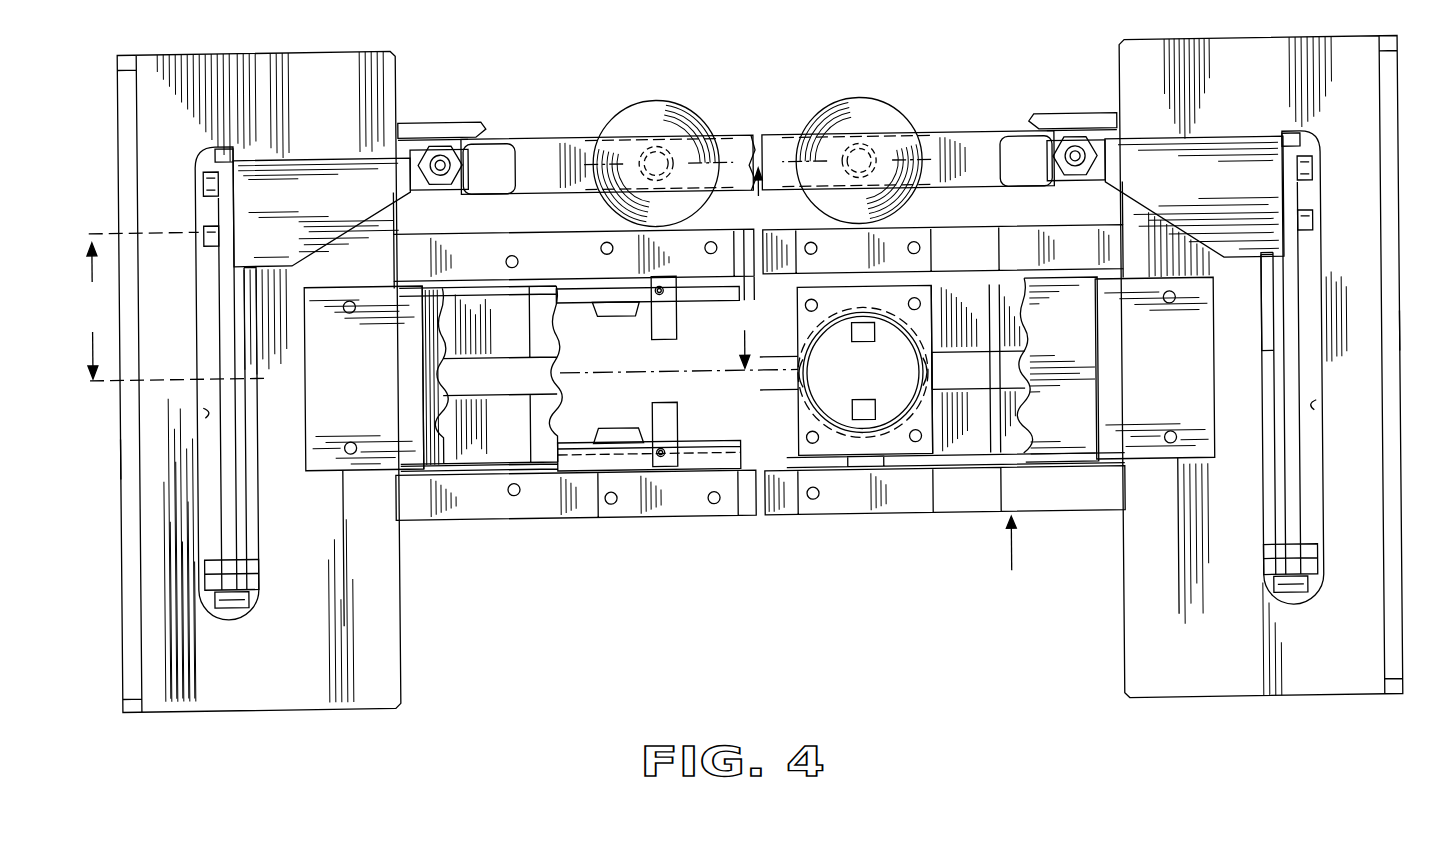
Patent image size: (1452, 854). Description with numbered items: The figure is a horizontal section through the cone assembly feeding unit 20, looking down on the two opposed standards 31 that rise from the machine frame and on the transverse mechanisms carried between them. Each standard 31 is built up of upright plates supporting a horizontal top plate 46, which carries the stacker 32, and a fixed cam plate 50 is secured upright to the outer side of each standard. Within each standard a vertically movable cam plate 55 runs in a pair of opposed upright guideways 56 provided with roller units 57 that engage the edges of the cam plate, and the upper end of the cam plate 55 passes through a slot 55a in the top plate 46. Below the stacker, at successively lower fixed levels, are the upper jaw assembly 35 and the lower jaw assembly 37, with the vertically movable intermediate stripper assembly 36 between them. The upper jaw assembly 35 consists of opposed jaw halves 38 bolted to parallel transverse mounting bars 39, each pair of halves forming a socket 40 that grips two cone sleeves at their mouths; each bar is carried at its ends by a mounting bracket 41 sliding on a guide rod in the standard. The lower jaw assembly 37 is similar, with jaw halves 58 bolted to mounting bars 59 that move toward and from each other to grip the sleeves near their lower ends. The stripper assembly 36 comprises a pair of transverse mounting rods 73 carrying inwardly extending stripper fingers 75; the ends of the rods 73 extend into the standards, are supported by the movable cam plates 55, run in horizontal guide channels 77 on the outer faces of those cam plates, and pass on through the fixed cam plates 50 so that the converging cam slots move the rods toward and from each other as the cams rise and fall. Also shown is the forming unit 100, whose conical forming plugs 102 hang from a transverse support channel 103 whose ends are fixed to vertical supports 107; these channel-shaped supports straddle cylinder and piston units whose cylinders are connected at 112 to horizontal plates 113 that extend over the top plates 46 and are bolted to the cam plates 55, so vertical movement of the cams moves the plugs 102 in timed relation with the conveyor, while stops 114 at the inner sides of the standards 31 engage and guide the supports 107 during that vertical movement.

The unit 20 is at (1011, 553).
The standards 31 is at (122, 549).
The stacker 32 is at (348, 463).
The upper jaw assembly 35 is at (924, 323).
The intermediate stripper assembly 36 is at (606, 270).
The lower jaw assembly 37 is at (700, 238).
The jaw halves 38 is at (877, 296).
The mounting bars 39 is at (978, 296).
The socket 40 is at (932, 381).
The mounting bracket 41 is at (486, 345).
The top plate 46 is at (727, 427).
The cam plate 50 is at (120, 440).
The cam plate 55 is at (200, 331).
The slot 55a is at (203, 405).
The guideways 56 is at (205, 170).
The roller units 57 is at (226, 140).
The jaw halves 58 is at (608, 314).
The mounting bars 59 is at (500, 540).
The mounting rods 73 is at (700, 302).
The stripper fingers 75 is at (678, 407).
The guide channels 77 is at (1322, 283).
The forming unit 100 is at (925, 109).
The forming plugs 102 is at (672, 106).
The support channel 103 is at (552, 135).
The vertical supports 107 is at (520, 193).
The connection 112 is at (1066, 176).
The horizontal plates 113 is at (758, 204).
The stops 114 is at (412, 200).